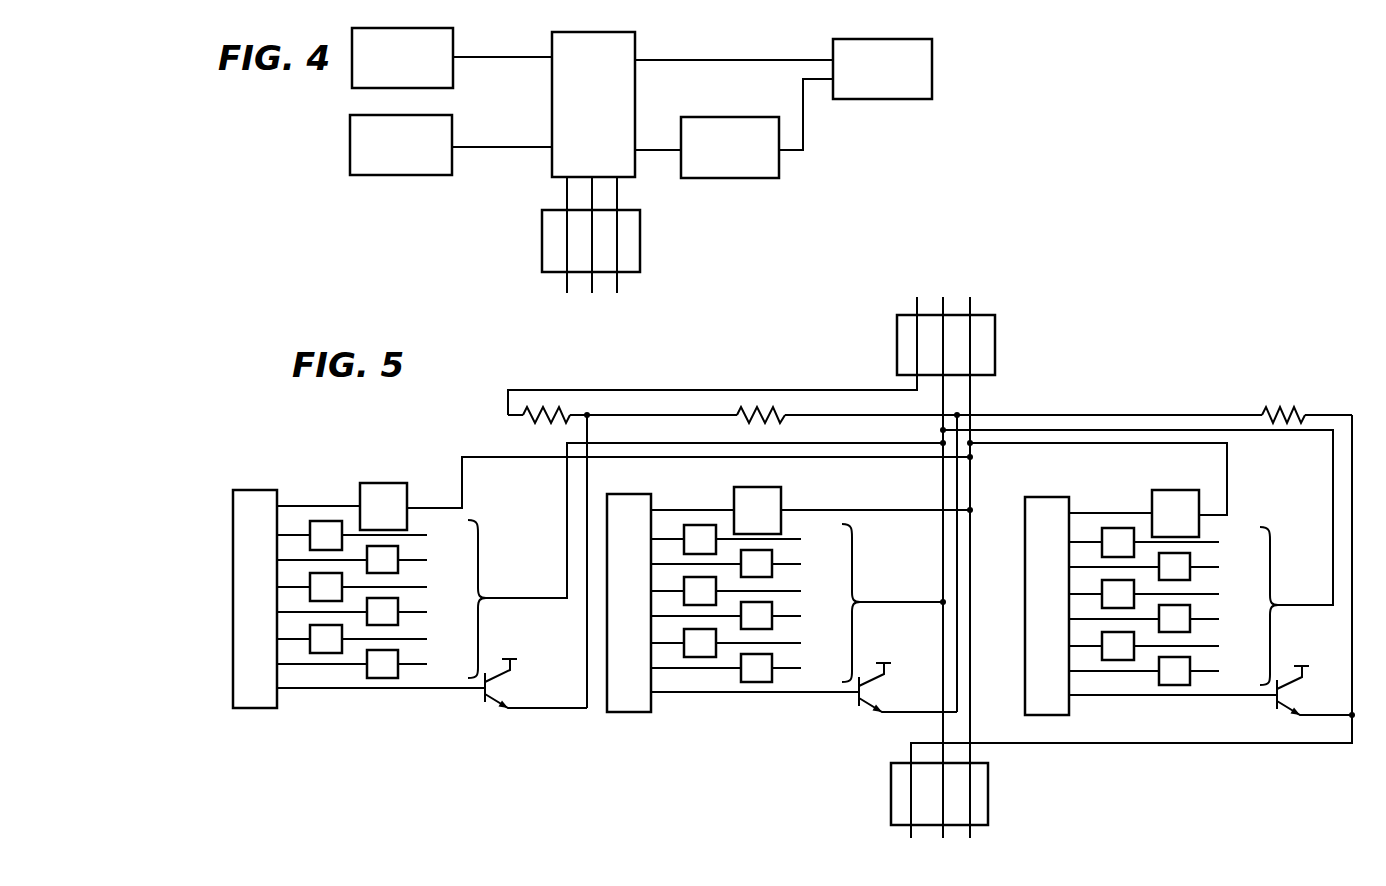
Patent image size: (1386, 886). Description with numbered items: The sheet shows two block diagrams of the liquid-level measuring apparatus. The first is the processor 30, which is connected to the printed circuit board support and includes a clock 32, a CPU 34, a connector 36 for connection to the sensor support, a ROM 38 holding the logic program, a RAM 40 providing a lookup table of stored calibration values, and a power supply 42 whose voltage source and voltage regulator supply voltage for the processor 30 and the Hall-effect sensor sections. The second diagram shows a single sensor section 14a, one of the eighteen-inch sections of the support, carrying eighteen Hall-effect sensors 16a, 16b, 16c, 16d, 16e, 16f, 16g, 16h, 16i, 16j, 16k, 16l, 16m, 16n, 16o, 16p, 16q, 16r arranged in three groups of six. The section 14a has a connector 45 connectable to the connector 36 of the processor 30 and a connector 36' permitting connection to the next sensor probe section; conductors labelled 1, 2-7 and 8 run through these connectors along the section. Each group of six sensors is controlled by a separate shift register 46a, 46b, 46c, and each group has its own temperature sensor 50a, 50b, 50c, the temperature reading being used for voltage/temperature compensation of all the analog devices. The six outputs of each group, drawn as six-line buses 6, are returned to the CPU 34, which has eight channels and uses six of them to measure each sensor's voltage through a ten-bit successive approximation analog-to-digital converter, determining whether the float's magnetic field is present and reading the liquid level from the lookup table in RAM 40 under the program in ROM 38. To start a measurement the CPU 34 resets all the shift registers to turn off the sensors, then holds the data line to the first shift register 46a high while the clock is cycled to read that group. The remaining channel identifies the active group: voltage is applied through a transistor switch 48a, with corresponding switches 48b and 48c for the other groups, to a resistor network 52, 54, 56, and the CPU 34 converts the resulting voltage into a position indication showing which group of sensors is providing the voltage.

In FIG. 4, the processor 30 is at (808, 170).
In FIG. 4, the clock 32 is at (371, 30).
In FIG. 4, the CPU 34 is at (583, 42).
In FIG. 4, the connector 36 is at (570, 227).
In FIG. 4, the ROM 38 is at (698, 126).
In FIG. 4, the RAM 40 is at (848, 46).
In FIG. 4, the power supply 42 is at (452, 126).
In FIG. 4, the conductor pin 1 is at (556, 272).
In FIG. 5, the conductor pin 1 is at (915, 302).
In FIG. 4, the conductor pins 2-7 is at (590, 284).
In FIG. 5, the conductor pins 2-7 is at (948, 282).
In FIG. 4, the conductor pin 8 is at (618, 284).
In FIG. 5, the conductor pin 8 is at (980, 300).
In FIG. 5, the connector 45 is at (996, 331).
In FIG. 5, the connector 36' is at (971, 794).
In FIG. 5, the six-conductor bus 6 is at (528, 592).
In FIG. 5, the resistor network resistor 52 is at (548, 405).
In FIG. 5, the resistor network resistor 54 is at (760, 405).
In FIG. 5, the resistor network resistor 56 is at (1283, 405).
In FIG. 5, the shift register 46a is at (250, 498).
In FIG. 5, the shift register 46b is at (636, 502).
In FIG. 5, the shift register 46c is at (1040, 505).
In FIG. 5, the temperature sensor 50a is at (377, 500).
In FIG. 5, the temperature sensor 50b is at (748, 505).
In FIG. 5, the temperature sensor 50c is at (1170, 506).
In FIG. 5, the Hall-effect sensor 16a is at (310, 524).
In FIG. 5, the Hall-effect sensor 16b is at (393, 549).
In FIG. 5, the Hall-effect sensor 16c is at (310, 577).
In FIG. 5, the Hall-effect sensor 16d is at (393, 601).
In FIG. 5, the Hall-effect sensor 16e is at (310, 629).
In FIG. 5, the Hall-effect sensor 16f is at (393, 653).
In FIG. 5, the Hall-effect sensor 16g is at (688, 525).
In FIG. 5, the Hall-effect sensor 16h is at (767, 553).
In FIG. 5, the Hall-effect sensor 16i is at (686, 601).
In FIG. 5, the Hall-effect sensor 16j is at (767, 605).
In FIG. 5, the Hall-effect sensor 16k is at (700, 658).
In FIG. 5, the Hall-effect sensor 16l is at (767, 657).
In FIG. 5, the Hall-effect sensor 16m is at (1102, 531).
In FIG. 5, the Hall-effect sensor 16n is at (1185, 556).
In FIG. 5, the Hall-effect sensor 16o is at (1102, 584).
In FIG. 5, the Hall-effect sensor 16p is at (1185, 608).
In FIG. 5, the Hall-effect sensor 16q is at (1102, 636).
In FIG. 5, the Hall-effect sensor 16r is at (1185, 660).
In FIG. 5, the transistor switch 48a is at (488, 703).
In FIG. 5, the transistor 48b is at (861, 707).
In FIG. 5, the transistor 48c is at (1278, 712).
In FIG. 5, the sensor section 14a is at (530, 770).